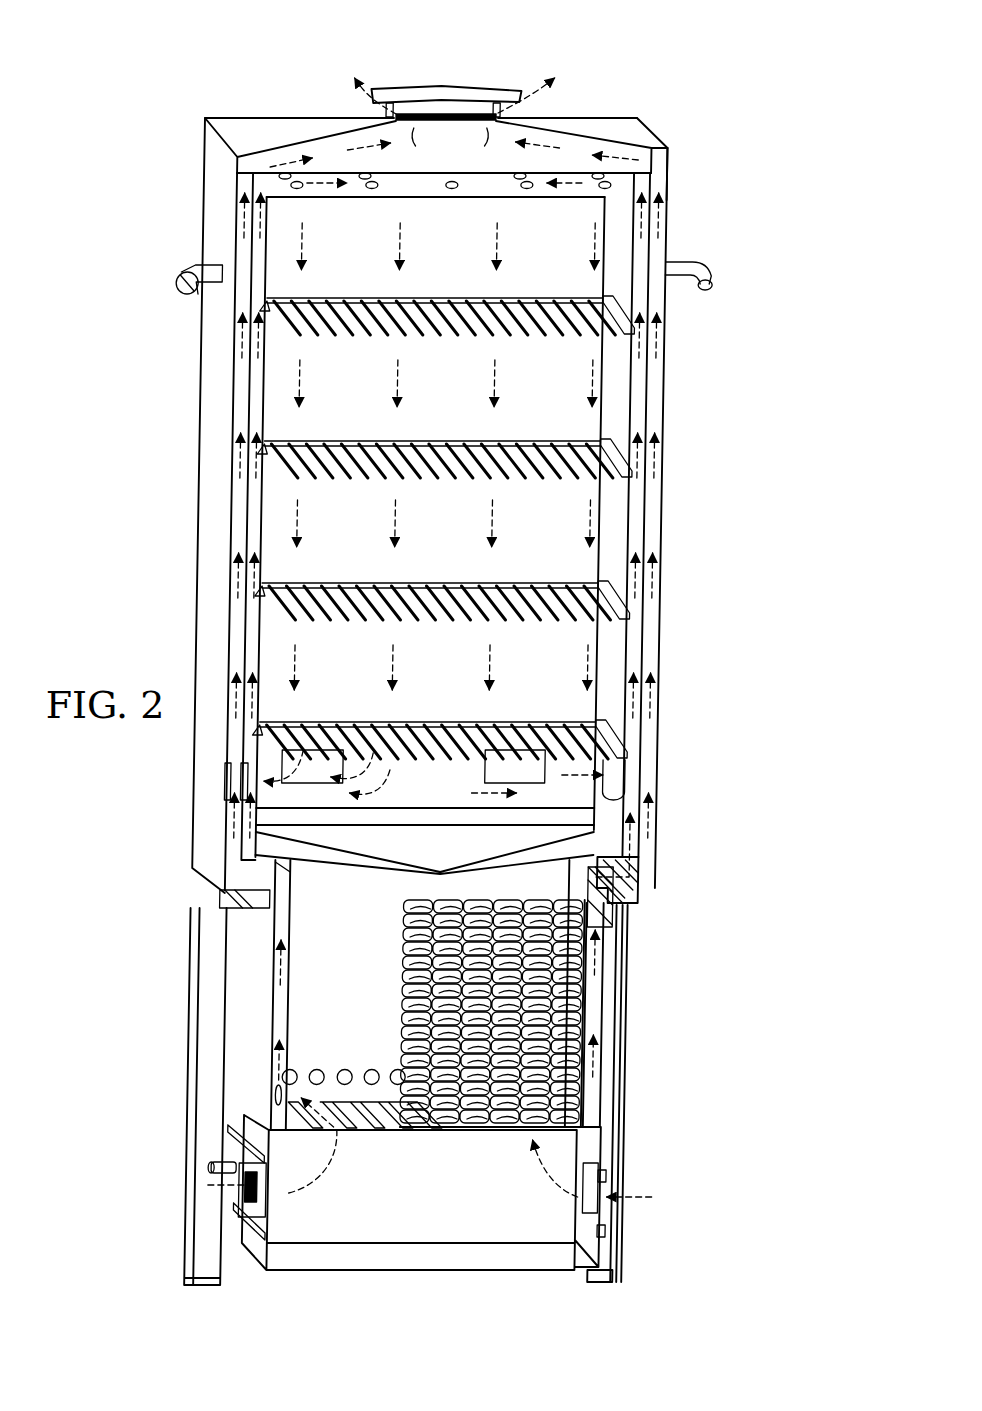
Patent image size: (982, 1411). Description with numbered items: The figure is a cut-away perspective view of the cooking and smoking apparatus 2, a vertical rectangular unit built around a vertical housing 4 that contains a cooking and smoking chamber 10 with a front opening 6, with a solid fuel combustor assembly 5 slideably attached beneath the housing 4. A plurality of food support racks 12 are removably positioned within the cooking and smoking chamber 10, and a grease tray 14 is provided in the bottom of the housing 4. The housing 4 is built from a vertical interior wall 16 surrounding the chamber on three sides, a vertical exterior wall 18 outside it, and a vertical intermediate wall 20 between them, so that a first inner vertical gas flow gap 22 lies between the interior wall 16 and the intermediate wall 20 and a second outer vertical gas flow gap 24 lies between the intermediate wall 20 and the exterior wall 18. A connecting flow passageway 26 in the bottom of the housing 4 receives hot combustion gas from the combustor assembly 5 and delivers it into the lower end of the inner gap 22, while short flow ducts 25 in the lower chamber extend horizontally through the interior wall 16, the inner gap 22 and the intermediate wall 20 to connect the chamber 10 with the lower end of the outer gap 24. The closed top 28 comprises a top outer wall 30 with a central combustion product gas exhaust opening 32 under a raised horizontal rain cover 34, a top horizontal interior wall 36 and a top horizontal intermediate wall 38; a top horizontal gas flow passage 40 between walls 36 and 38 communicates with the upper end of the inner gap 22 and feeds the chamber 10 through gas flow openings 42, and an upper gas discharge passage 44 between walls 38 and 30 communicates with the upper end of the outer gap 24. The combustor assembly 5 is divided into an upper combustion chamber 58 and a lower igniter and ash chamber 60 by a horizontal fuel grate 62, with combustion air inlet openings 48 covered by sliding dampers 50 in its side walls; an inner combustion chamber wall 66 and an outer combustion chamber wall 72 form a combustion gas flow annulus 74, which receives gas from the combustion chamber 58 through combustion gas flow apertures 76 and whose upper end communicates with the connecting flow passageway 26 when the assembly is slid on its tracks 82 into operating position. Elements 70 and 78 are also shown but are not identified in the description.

The cooking and smoking apparatus 2 is at (280, 62).
The vertical housing 4 is at (208, 393).
The solid fuel combustor assembly 5 is at (645, 1152).
The front opening 6 is at (622, 648).
The cooking and smoking chamber 10 is at (470, 539).
The food support racks 12 is at (535, 298).
The grease tray 14 is at (386, 858).
The vertical interior wall 16 is at (655, 529).
The vertical exterior wall 18 is at (212, 566).
The vertical intermediate wall 20 is at (662, 247).
The first (inner) vertical gas flow gap 22 is at (650, 413).
The second (outer) vertical gas flow gap 24 is at (666, 376).
The short flow ducts 25 is at (499, 770).
The connecting flow passageway 26 is at (658, 862).
The closed top 28 is at (628, 120).
The top outer wall 30 is at (260, 130).
The combustion product gas exhaust opening 32 is at (479, 97).
The raised horizontal rain cover 34 is at (401, 101).
The top horizontal interior wall 36 is at (389, 185).
The top horizontal intermediate wall 38 is at (573, 163).
The top horizontal gas flow passage 40 is at (487, 180).
The gas flow openings 42 is at (455, 182).
The upper gas discharge passage 44 is at (450, 128).
The combustion air inlet openings 48 is at (275, 1228).
The sliding dampers 50 is at (250, 1148).
The upper combustion chamber 58 is at (352, 981).
The lower igniter and ash chamber 60 is at (393, 1252).
The horizontal fuel grate 62 is at (413, 1130).
The inner combustion chamber wall 66 is at (307, 920).
The fuel stack 70 is at (614, 1010).
The outer combustion chamber wall 72 is at (290, 1047).
The combustion gas flow annulus 74 is at (620, 988).
The combustion gas flow apertures 76 is at (363, 1070).
The post 78 is at (630, 1090).
The tracks 82 is at (628, 916).